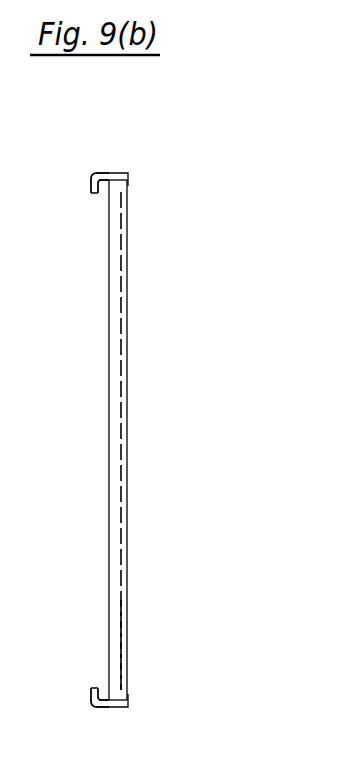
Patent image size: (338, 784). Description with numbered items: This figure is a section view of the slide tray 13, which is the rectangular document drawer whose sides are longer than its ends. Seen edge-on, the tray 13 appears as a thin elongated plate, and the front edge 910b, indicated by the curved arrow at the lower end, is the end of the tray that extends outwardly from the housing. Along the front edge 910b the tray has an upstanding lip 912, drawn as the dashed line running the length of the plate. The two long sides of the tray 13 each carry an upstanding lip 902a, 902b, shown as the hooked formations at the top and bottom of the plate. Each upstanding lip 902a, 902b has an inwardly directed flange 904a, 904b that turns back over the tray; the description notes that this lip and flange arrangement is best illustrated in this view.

The tray 13 is at (92, 546).
The upstanding lip 912 is at (110, 359).
The upstanding lip 902a is at (107, 708).
The upstanding lip 902b is at (107, 176).
The inwardly directed flange 904a is at (93, 688).
The inwardly directed flange 904b is at (91, 183).
The front edge 910b is at (133, 668).